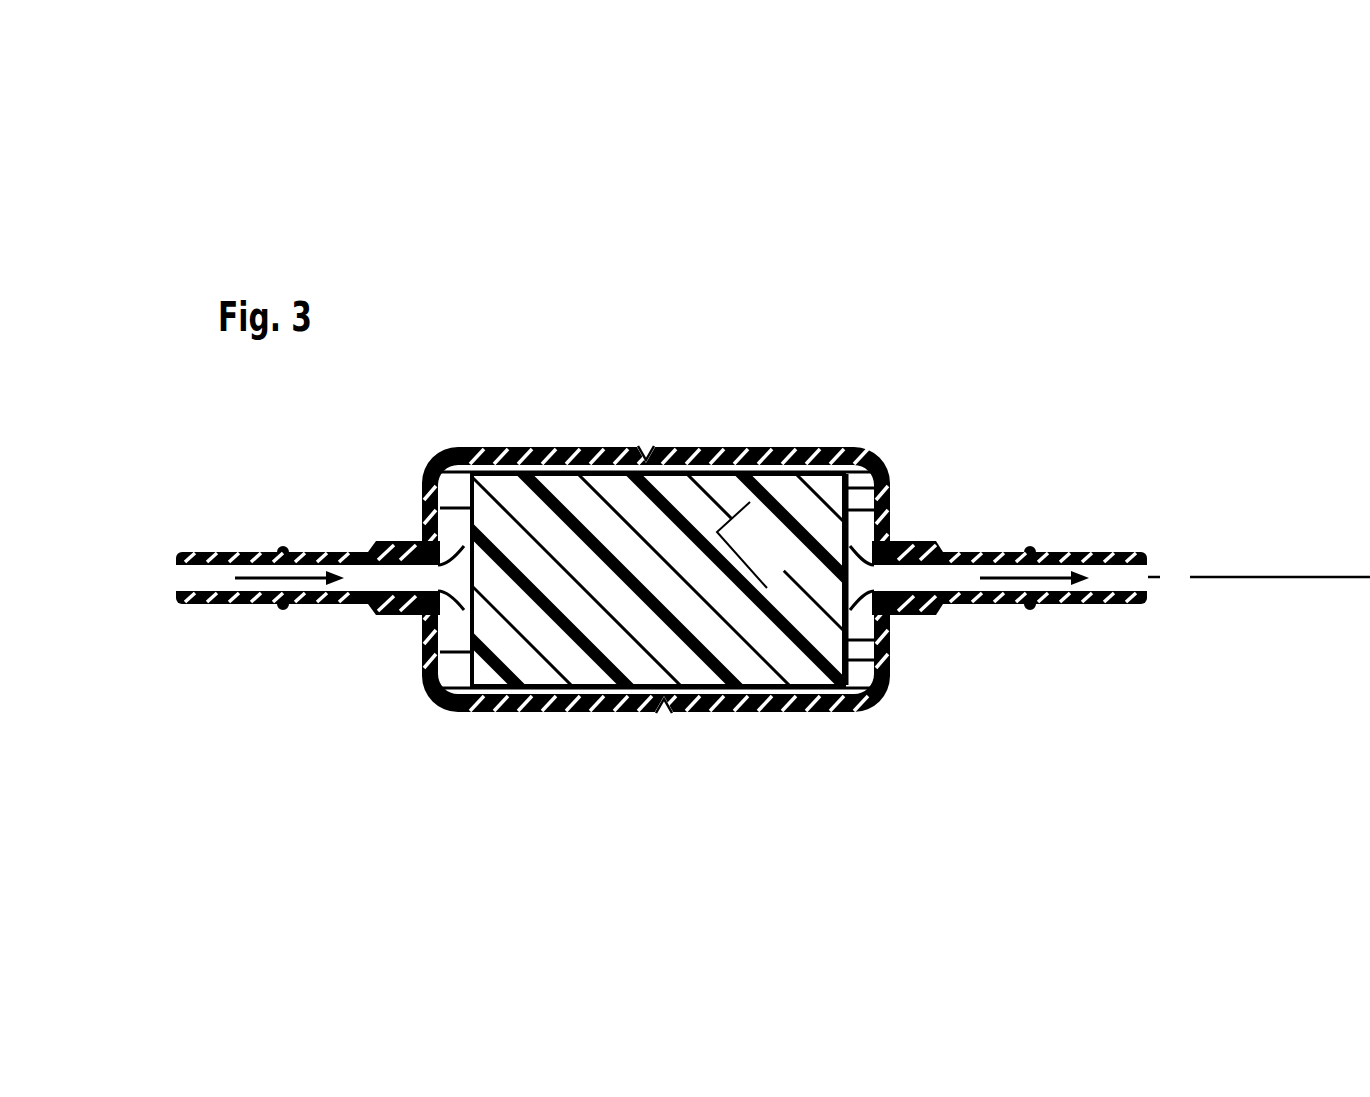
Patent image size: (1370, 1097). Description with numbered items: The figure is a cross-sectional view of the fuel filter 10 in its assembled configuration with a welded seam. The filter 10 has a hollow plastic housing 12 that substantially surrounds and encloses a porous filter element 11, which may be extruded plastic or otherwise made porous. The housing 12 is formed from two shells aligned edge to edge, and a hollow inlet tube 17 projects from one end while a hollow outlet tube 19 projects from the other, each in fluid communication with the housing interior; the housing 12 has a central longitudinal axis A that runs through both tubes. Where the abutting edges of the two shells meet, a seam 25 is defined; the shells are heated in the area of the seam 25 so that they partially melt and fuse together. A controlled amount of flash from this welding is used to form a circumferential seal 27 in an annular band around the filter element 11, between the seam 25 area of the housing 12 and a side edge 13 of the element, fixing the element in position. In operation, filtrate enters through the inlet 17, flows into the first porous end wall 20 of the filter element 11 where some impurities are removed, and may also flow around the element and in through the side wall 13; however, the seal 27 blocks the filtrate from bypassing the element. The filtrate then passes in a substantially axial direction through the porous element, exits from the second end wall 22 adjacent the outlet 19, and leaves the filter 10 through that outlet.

The filter 10 is at (858, 247).
The porous filter element 11 is at (775, 560).
The housing 12 is at (875, 446).
The side edge portion 13 is at (556, 470).
The inlet tube 17 is at (315, 552).
The outlet tube 19 is at (1068, 547).
The first porous end wall 20 is at (413, 540).
The second end wall 22 is at (850, 600).
The seam 25 is at (648, 455).
The circumferential seal 27 is at (712, 700).
The central longitudinal axis A is at (1290, 580).